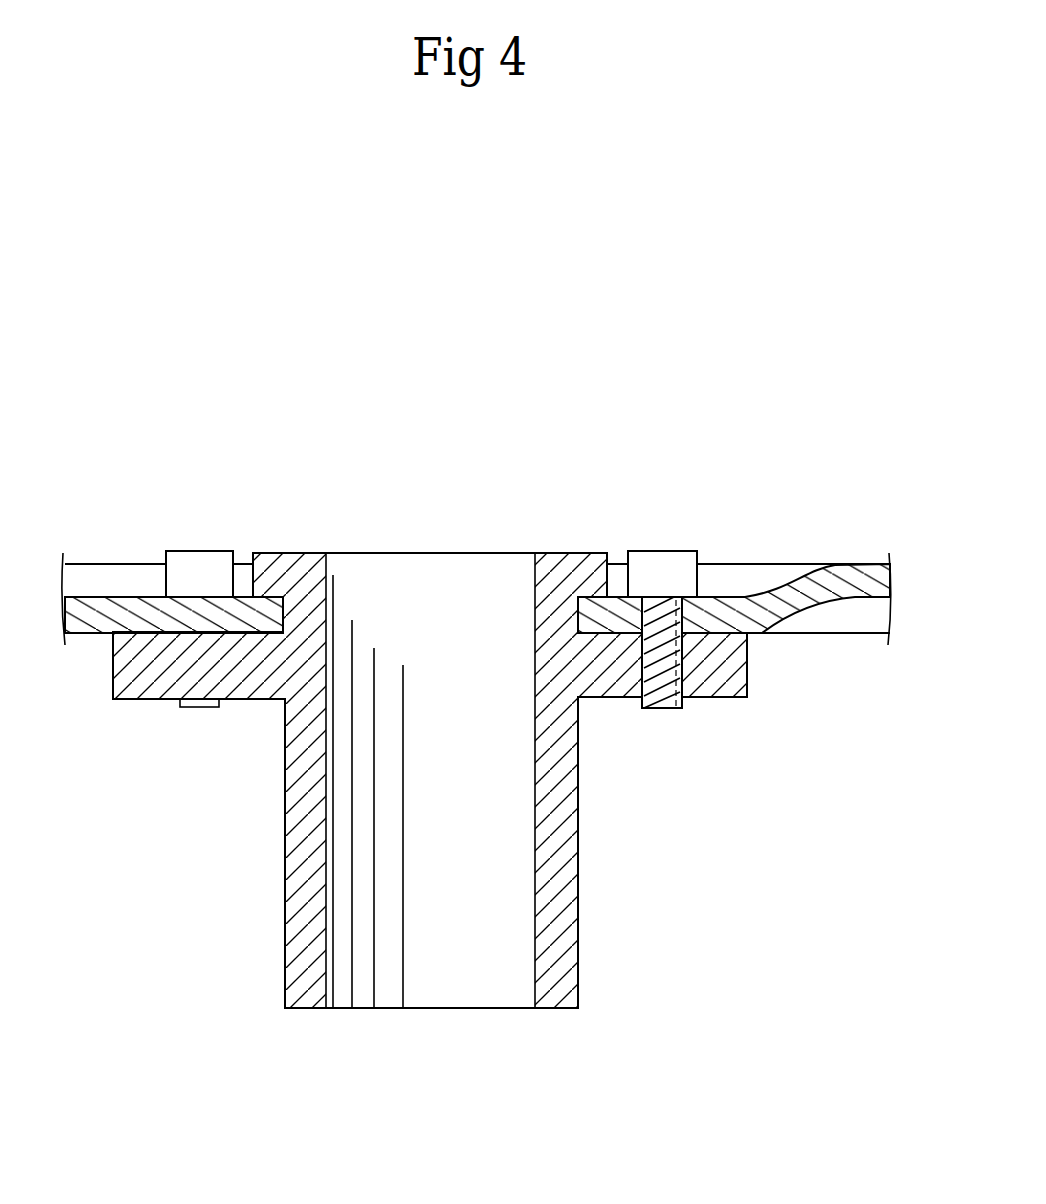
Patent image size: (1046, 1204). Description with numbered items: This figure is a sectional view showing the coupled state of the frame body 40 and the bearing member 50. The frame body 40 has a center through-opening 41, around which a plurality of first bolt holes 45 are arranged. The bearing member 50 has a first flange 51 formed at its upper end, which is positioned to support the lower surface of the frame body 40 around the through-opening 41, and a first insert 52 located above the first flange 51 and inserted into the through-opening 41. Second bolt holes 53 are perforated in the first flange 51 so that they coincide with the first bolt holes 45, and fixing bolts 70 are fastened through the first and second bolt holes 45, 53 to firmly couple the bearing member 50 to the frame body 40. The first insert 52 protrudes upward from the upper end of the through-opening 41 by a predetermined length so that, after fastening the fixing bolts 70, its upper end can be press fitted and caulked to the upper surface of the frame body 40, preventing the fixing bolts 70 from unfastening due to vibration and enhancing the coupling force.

The frame body 40 is at (114, 606).
The through-opening 41 is at (303, 600).
The first bolt holes 45 is at (672, 592).
The bearing member 50 is at (300, 860).
The first flange 51 is at (738, 698).
The first insert 52 is at (573, 553).
The second bolt holes 53 is at (668, 710).
The fixing bolts 70 is at (660, 570).